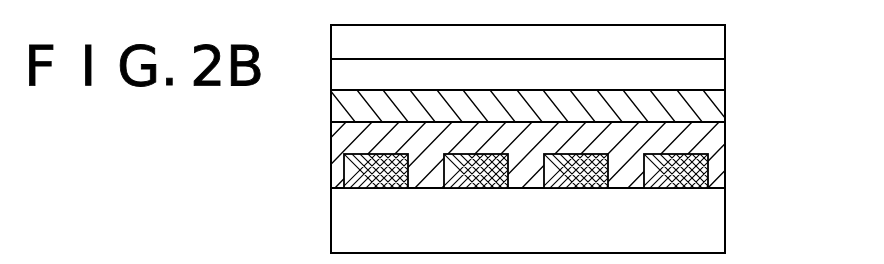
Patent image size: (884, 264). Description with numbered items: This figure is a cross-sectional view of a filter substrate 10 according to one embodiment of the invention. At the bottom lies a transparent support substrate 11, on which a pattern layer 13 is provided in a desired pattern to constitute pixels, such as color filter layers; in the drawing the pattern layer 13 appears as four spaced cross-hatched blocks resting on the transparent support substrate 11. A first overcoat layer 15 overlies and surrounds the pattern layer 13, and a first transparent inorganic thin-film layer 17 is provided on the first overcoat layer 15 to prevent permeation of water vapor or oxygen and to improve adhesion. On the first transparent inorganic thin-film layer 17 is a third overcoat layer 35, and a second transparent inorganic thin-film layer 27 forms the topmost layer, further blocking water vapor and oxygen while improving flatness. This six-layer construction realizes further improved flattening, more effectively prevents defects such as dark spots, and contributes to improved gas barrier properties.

The filter substrate 10 is at (808, 25).
The transparent support substrate 11 is at (708, 222).
The pattern layer 13 is at (697, 172).
The first overcoat layer 15 is at (708, 143).
The first transparent inorganic thin-film layer 17 is at (708, 112).
The second transparent inorganic thin-film layer 27 is at (710, 44).
The third overcoat layer 35 is at (708, 78).